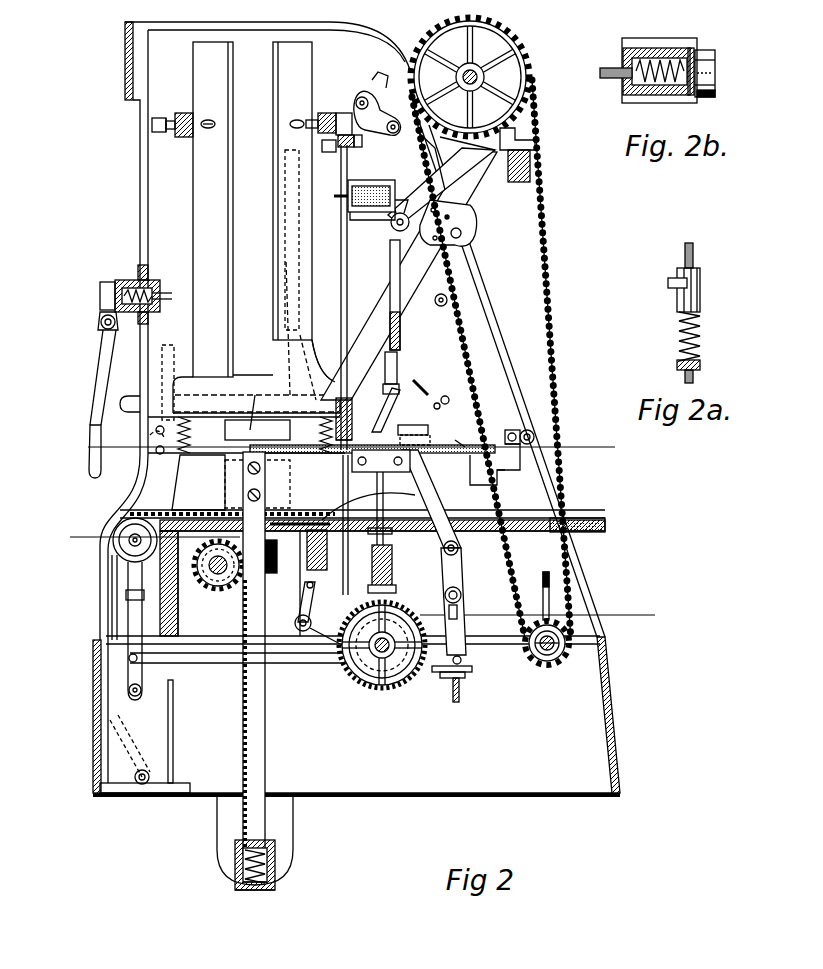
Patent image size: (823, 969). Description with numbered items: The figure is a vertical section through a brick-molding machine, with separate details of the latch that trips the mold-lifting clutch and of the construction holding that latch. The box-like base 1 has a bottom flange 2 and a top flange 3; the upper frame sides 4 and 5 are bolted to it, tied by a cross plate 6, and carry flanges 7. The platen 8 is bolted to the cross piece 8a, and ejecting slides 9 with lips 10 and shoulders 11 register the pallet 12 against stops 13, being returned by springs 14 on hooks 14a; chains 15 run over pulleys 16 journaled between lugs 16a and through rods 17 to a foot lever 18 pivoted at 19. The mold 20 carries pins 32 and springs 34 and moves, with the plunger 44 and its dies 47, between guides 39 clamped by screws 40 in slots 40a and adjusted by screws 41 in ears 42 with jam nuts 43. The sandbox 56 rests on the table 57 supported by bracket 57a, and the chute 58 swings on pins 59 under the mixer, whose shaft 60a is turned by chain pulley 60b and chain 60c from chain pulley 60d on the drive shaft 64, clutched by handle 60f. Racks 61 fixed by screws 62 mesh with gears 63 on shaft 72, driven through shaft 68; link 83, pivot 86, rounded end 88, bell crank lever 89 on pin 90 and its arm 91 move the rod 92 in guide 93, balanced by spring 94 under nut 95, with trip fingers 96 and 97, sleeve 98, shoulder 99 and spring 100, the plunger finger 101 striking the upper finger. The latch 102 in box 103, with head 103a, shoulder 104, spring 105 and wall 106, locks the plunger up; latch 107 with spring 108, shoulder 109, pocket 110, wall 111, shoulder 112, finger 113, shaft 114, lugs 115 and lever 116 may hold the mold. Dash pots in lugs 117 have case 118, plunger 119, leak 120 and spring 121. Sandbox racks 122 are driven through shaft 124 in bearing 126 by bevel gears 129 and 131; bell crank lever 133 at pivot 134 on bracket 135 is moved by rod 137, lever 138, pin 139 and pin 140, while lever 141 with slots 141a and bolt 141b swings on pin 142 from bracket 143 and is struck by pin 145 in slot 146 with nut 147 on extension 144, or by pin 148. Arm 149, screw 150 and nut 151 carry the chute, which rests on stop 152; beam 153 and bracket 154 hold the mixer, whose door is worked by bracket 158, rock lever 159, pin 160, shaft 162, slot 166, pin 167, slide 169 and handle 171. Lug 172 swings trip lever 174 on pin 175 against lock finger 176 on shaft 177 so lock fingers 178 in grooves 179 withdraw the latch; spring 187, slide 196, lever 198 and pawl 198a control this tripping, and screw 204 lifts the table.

In FIG. 2, the base 1 is at (356, 716).
In FIG. 2, the flange 2 is at (600, 787).
In FIG. 2, the flange 3 is at (575, 665).
In FIG. 2, the upper frame side 4 is at (362, 576).
In FIG. 2, the upper frame side 5 is at (178, 40).
In FIG. 2, the cross plate 6 is at (125, 80).
In FIG. 2, the flanges 7 is at (158, 632).
In FIG. 2, the platen 8 is at (278, 548).
In FIG. 2, the cross piece 8a is at (307, 562).
In FIG. 2, the ejecting slides 9 is at (290, 518).
In FIG. 2, the projecting lips 10 is at (285, 518).
In FIG. 2, the shoulders 11 is at (310, 520).
In FIG. 2, the pallet 12 is at (232, 510).
In FIG. 2, the stops 13 is at (463, 510).
In FIG. 2, the springs 14 is at (357, 525).
In FIG. 2, the hooks 14a is at (368, 504).
In FIG. 2, the chains 15 is at (183, 512).
In FIG. 2, the pulleys 16 is at (113, 530).
In FIG. 2, the lugs 16a is at (147, 544).
In FIG. 2, the rods 17 is at (112, 610).
In FIG. 2, the foot lever 18 is at (122, 728).
In FIG. 2, the pivot 19 is at (150, 776).
In FIG. 2, the mold 20 is at (198, 482).
In FIG. 2, the pins 32 is at (320, 435).
In FIG. 2, the springs 34 is at (191, 438).
In FIG. 2, the guides 39 is at (200, 172).
In FIG. 2, the screws 40 is at (208, 130).
In FIG. 2, the slots 40a is at (212, 122).
In FIG. 2, the adjusting screws 41 is at (162, 118).
In FIG. 2, the ears 42 is at (184, 137).
In FIG. 2, the jam nuts 43 is at (172, 118).
In FIG. 2, the plunger 44 is at (256, 376).
In FIG. 2, the dies 47 is at (257, 436).
In FIG. 2, the sandbox 56 is at (382, 415).
In FIG. 2, the table 57 is at (490, 485).
In FIG. 2, the bracket 57a is at (372, 462).
In FIG. 2, the chute 58 is at (409, 275).
In FIG. 2, the pins 59 is at (462, 233).
In FIG. 2, the mixer shaft 60a is at (484, 77).
In FIG. 2, the chain pulley 60b is at (520, 40).
In FIG. 2, the chain 60c is at (548, 232).
In FIG. 2, the chain pulley 60d is at (552, 664).
In FIG. 2, the operating handle 60f is at (552, 572).
In FIG. 2, the racks 61 is at (266, 748).
In FIG. 2, the screws 62 is at (257, 484).
In FIG. 2, the gears 63 is at (222, 590).
In FIG. 2, the shaft 64 is at (575, 643).
In FIG. 2, the shaft 68 is at (380, 660).
In FIG. 2, the shaft 72 is at (212, 576).
In FIG. 2, the link 83 is at (262, 600).
In FIG. 2, the pivot 86 is at (178, 600).
In FIG. 2, the rounded end 88 is at (290, 621).
In FIG. 2, the bell crank lever 89 is at (303, 598).
In FIG. 2, the pin 90 is at (310, 632).
In FIG. 2, the arm 91 is at (360, 665).
In FIG. 2, the rod 92 is at (348, 292).
In FIG. 2a, the rod 92 is at (695, 252).
In FIG. 2, the guide 93 is at (356, 147).
In FIG. 2, the spring 94 is at (323, 113).
In FIG. 2, the nut 95 is at (345, 112).
In FIG. 2, the trip finger 96 is at (350, 160).
In FIG. 2, the trip finger 97 is at (336, 415).
In FIG. 2a, the trip finger 97 is at (668, 283).
In FIG. 2, the sleeve 98 is at (349, 398).
In FIG. 2a, the sleeve 98 is at (702, 283).
In FIG. 2a, the shoulder 99 is at (702, 366).
In FIG. 2a, the spring 100 is at (702, 333).
In FIG. 2, the finger 101 is at (330, 378).
In FIG. 2, the spring latch 102 is at (330, 208).
In FIG. 2b, the spring latch 102 is at (610, 68).
In FIG. 2, the box 103 is at (385, 190).
In FIG. 2b, the box 103 is at (680, 60).
In FIG. 2, the head 103a is at (480, 165).
In FIG. 2b, the head 103a is at (707, 50).
In FIG. 2, the shoulder 104 is at (368, 208).
In FIG. 2b, the shoulder 104 is at (672, 40).
In FIG. 2, the spring 105 is at (372, 228).
In FIG. 2b, the spring 105 is at (660, 96).
In FIG. 2, the wall 106 is at (405, 200).
In FIG. 2b, the wall 106 is at (715, 62).
In FIG. 2, the latch 107 is at (170, 292).
In FIG. 2, the spring 108 is at (150, 282).
In FIG. 2, the shoulder 109 is at (160, 305).
In FIG. 2, the pocket 110 is at (132, 280).
In FIG. 2, the wall 111 is at (135, 280).
In FIG. 2, the shoulder 112 is at (100, 296).
In FIG. 2, the locking finger 113 is at (101, 322).
In FIG. 2, the shaft 114 is at (103, 330).
In FIG. 2, the lugs 115 is at (104, 350).
In FIG. 2, the lever 116 is at (97, 400).
In FIG. 2, the lugs 117 is at (280, 827).
In FIG. 2, the case 118 is at (276, 873).
In FIG. 2, the plunger 119 is at (240, 875).
In FIG. 2, the leak 120 is at (257, 890).
In FIG. 2, the spring 121 is at (245, 890).
In FIG. 2, the racks 122 is at (455, 435).
In FIG. 2, the shaft 124 is at (383, 516).
In FIG. 2, the bearing 126 is at (383, 472).
In FIG. 2, the beveled gear 129 is at (398, 580).
In FIG. 2, the beveled gear 131 is at (398, 683).
In FIG. 2, the bell crank lever 133 is at (466, 675).
In FIG. 2, the pivot 134 is at (462, 661).
In FIG. 2, the bracket 135 is at (460, 691).
In FIG. 2, the rod 137 is at (237, 659).
In FIG. 2, the lever 138 is at (128, 585).
In FIG. 2, the pin 139 is at (128, 665).
In FIG. 2, the pin 140 is at (142, 688).
In FIG. 2, the lever 141 is at (460, 580).
In FIG. 2, the slots 141a is at (458, 612).
In FIG. 2, the bolt 141b is at (462, 597).
In FIG. 2, the pin 142 is at (459, 549).
In FIG. 2, the bracket 143 is at (438, 499).
In FIG. 2, the extension 144 is at (526, 466).
In FIG. 2, the pin 145 is at (522, 430).
In FIG. 2, the slot 146 is at (510, 433).
In FIG. 2, the nut 147 is at (535, 435).
In FIG. 2, the pin 148 is at (424, 425).
In FIG. 2, the arm 149 is at (448, 396).
In FIG. 2, the screw 150 is at (434, 369).
In FIG. 2, the nut 151 is at (442, 404).
In FIG. 2, the stop 152 is at (447, 297).
In FIG. 2, the beam 153 is at (532, 160).
In FIG. 2, the bracket 154 is at (520, 135).
In FIG. 2, the bracket 158 is at (435, 161).
In FIG. 2, the rock lever 159 is at (378, 108).
In FIG. 2, the pin 160 is at (425, 105).
In FIG. 2, the shaft 162 is at (389, 72).
In FIG. 2, the slot 166 is at (322, 148).
In FIG. 2, the pin 167 is at (314, 330).
In FIG. 2, the slide 169 is at (224, 408).
In FIG. 2, the handle 171 is at (124, 414).
In FIG. 2, the lug 172 is at (423, 437).
In FIG. 2, the trip lever 174 is at (399, 386).
In FIG. 2, the pin 175 is at (400, 330).
In FIG. 2, the lock finger 176 is at (390, 255).
In FIG. 2, the shaft 177 is at (393, 232).
In FIG. 2, the lock fingers 178 is at (441, 186).
In FIG. 2b, the grooves 179 is at (705, 97).
In FIG. 2, the spring 187 is at (398, 360).
In FIG. 2, the slide 196 is at (245, 403).
In FIG. 2, the lever 198 is at (108, 480).
In FIG. 2, the pawl 198a is at (156, 437).
In FIG. 2, the screw 204 is at (388, 530).